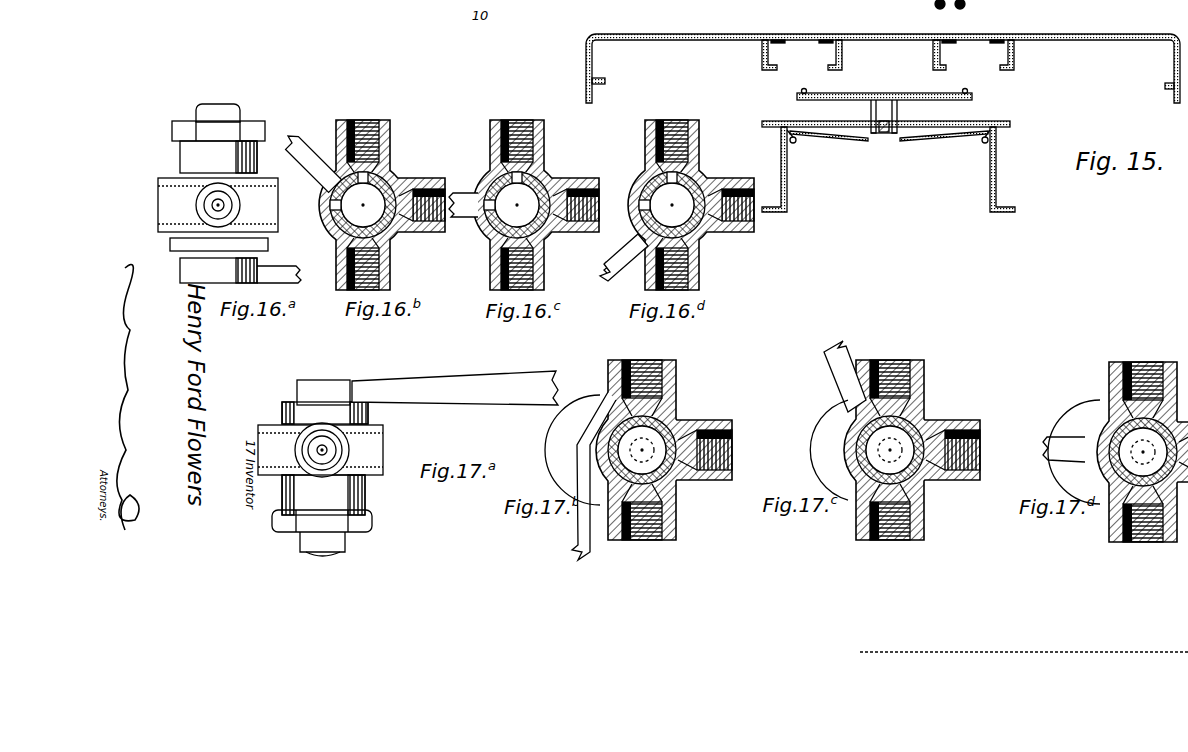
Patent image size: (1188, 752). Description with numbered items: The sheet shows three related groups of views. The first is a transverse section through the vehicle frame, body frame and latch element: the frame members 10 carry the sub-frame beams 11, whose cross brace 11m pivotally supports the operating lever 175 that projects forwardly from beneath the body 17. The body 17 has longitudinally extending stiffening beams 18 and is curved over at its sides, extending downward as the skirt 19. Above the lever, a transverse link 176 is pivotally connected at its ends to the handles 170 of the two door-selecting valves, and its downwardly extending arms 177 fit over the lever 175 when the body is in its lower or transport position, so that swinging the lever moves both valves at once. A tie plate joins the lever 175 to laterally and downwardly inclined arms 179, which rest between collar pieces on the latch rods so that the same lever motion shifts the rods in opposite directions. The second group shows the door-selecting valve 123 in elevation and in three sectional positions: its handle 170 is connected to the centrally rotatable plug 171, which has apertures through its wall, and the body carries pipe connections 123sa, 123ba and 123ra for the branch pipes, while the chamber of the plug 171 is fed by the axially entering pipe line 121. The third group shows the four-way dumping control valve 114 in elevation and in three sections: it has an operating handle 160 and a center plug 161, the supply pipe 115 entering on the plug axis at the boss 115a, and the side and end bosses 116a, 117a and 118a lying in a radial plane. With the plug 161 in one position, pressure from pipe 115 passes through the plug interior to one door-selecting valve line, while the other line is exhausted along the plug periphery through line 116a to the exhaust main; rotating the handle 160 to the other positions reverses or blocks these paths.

In FIG. 15, the frame members 10 is at (787, 196).
In FIG. 15, the sub-frame beams 11 is at (793, 144).
In FIG. 15, the cross brace 11m is at (932, 121).
In FIG. 15, the body 17 is at (714, 34).
In FIG. 17A, the body 17 is at (258, 450).
In FIG. 15, the stiffening beams 18 is at (836, 50).
In FIG. 15, the skirt 19 is at (586, 50).
In FIG. 15, the handle 170 is at (797, 97).
In FIG. 16A, the handle 170 is at (285, 268).
In FIG. 16B, the handle 170 is at (333, 165).
In FIG. 16C, the handle 170 is at (460, 222).
In FIG. 16D, the handle 170 is at (606, 262).
In FIG. 15, the operating lever 175 is at (884, 133).
In FIG. 15, the transverse link 176 is at (862, 100).
In FIG. 15, the downwardly extending arms 177 is at (873, 134).
In FIG. 15, the inclined arms 179 is at (820, 137).
In FIG. 16A, the pipe line 121 is at (240, 108).
In FIG. 16A, the door-selecting valve 123 is at (190, 150).
In FIG. 16B, the door-selecting valve 123 is at (382, 205).
In FIG. 16C, the door-selecting valve 123 is at (536, 205).
In FIG. 16D, the door-selecting valve 123 is at (691, 205).
In FIG. 16A, the pipe connection 123sa is at (265, 186).
In FIG. 16B, the pipe connection 123sa is at (370, 132).
In FIG. 16C, the pipe connection 123sa is at (520, 135).
In FIG. 16D, the pipe connection 123sa is at (673, 138).
In FIG. 16A, the pipe connection 123ba is at (160, 205).
In FIG. 16B, the pipe connection 123ba is at (392, 275).
In FIG. 16C, the pipe connection 123ba is at (545, 278).
In FIG. 16D, the pipe connection 123ba is at (700, 270).
In FIG. 16A, the rear pipe connection 123ra is at (222, 212).
In FIG. 16B, the rear pipe connection 123ra is at (420, 180).
In FIG. 16C, the rear pipe connection 123ra is at (576, 182).
In FIG. 16D, the rear pipe connection 123ra is at (730, 183).
In FIG. 16B, the rotatable plug 171 is at (393, 174).
In FIG. 16C, the rotatable plug 171 is at (547, 176).
In FIG. 16D, the rotatable plug 171 is at (703, 175).
In FIG. 17A, the dumping control valve 114 is at (365, 440).
In FIG. 17B, the dumping control valve 114 is at (664, 450).
In FIG. 17C, the dumping control valve 114 is at (926, 405).
In FIG. 17D, the dumping control valve 114 is at (1142, 452).
In FIG. 17A, the pipe 115 is at (345, 546).
In FIG. 17A, the lower boss 115a is at (368, 492).
In FIG. 17A, the line 116a is at (290, 470).
In FIG. 17B, the line 116a is at (733, 435).
In FIG. 17C, the line 116a is at (982, 445).
In FIG. 17A, the bottom boss 117a is at (400, 448).
In FIG. 17B, the bottom boss 117a is at (676, 524).
In FIG. 17C, the bottom boss 117a is at (924, 527).
In FIG. 17D, the bottom boss 117a is at (1128, 545).
In FIG. 17A, the top boss 118a is at (275, 422).
In FIG. 17B, the top boss 118a is at (670, 372).
In FIG. 17C, the top boss 118a is at (922, 375).
In FIG. 17D, the top boss 118a is at (1145, 375).
In FIG. 17A, the operating handle 160 is at (482, 380).
In FIG. 17B, the operating handle 160 is at (576, 540).
In FIG. 17C, the operating handle 160 is at (828, 360).
In FIG. 17D, the operating handle 160 is at (1056, 437).
In FIG. 17B, the center plug 161 is at (616, 437).
In FIG. 17C, the center plug 161 is at (860, 455).
In FIG. 17D, the center plug 161 is at (1112, 482).